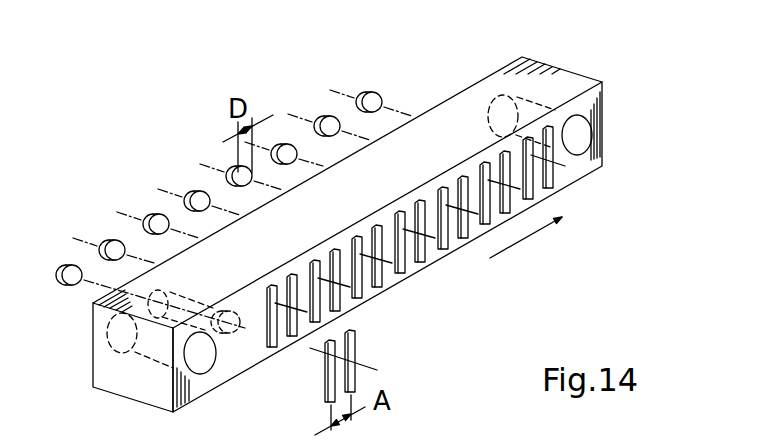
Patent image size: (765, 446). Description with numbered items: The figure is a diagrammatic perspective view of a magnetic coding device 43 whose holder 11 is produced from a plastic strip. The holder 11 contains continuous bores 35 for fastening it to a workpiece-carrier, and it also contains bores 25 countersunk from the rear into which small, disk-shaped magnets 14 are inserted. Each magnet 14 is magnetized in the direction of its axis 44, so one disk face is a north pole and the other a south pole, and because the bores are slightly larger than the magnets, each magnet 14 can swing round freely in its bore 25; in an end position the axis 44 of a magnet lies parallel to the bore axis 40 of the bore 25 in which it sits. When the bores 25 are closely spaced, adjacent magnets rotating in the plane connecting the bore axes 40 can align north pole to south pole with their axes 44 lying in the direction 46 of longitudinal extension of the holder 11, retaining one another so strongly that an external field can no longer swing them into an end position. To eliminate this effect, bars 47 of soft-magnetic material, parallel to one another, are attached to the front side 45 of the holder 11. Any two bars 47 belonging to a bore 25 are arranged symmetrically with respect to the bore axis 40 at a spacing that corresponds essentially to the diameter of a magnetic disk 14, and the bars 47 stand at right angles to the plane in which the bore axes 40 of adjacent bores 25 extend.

The holder 11 is at (485, 93).
The small disk-shaped magnets 14 is at (107, 233).
The bores 25 is at (190, 300).
The continuous bores 35 is at (203, 362).
The bore axis 40 is at (297, 343).
The magnetic coding device 43 is at (315, 103).
The magnet axis 44 is at (157, 187).
The front side of the holder 45 is at (350, 302).
The direction of longitudinal extension of the holder 46 is at (513, 245).
The soft-magnetic bars 47 is at (337, 255).